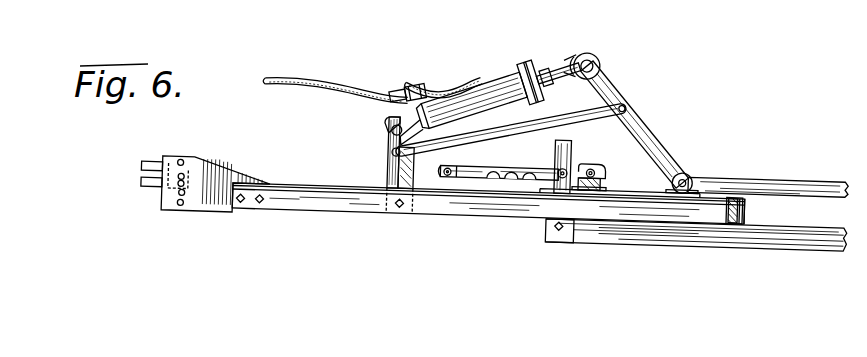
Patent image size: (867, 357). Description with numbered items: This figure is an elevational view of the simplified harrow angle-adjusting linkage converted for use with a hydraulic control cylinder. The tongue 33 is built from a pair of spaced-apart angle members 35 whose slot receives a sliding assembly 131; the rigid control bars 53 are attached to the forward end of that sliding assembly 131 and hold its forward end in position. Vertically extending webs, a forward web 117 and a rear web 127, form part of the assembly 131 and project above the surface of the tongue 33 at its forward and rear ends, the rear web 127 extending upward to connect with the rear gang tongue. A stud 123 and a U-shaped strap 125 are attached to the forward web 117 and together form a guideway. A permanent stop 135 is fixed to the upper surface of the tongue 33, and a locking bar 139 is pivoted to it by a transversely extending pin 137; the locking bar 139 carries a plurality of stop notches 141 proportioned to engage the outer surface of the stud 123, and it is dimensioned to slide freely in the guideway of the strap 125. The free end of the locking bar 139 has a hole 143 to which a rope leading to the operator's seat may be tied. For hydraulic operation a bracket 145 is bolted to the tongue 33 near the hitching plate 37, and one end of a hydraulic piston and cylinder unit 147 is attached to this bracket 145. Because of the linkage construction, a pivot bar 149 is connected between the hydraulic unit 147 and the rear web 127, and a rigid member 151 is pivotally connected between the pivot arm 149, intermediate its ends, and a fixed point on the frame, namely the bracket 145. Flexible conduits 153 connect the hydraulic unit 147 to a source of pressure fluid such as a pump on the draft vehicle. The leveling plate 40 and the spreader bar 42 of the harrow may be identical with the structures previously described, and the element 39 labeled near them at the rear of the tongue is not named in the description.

The tongue 33 is at (310, 210).
The angle members 35 is at (365, 207).
The hitching plate 37 is at (157, 195).
The stop plate 39 is at (730, 208).
The leveling plate 40 is at (743, 210).
The spreader bar 42 is at (736, 216).
The rigid control bars 53 is at (672, 238).
The forward upstanding web 117 is at (559, 230).
The stud 123 is at (567, 172).
The U-shaped strap 125 is at (554, 152).
The rear web 127 is at (688, 180).
The sliding assembly 131 is at (637, 212).
The permanent stop 135 is at (602, 185).
The transversely extending pin 137 is at (597, 173).
The locking bar 139 is at (441, 170).
The stop notches 141 is at (493, 171).
The hole 143 is at (448, 170).
The bracket 145 is at (390, 170).
The hydraulic piston and cylinder unit 147 is at (480, 93).
The pivot bar 149 is at (610, 77).
The rigid member 151 is at (550, 130).
The flexible conduits 153 is at (315, 74).